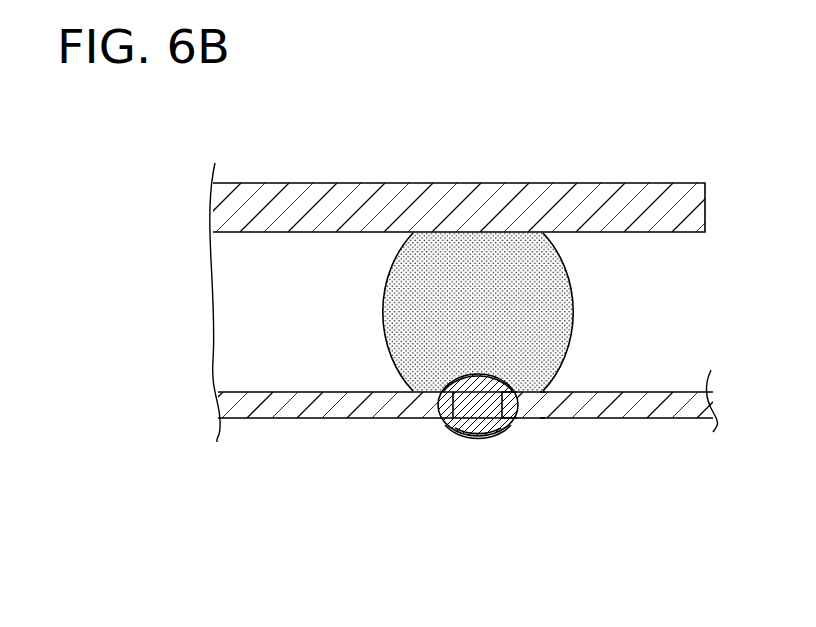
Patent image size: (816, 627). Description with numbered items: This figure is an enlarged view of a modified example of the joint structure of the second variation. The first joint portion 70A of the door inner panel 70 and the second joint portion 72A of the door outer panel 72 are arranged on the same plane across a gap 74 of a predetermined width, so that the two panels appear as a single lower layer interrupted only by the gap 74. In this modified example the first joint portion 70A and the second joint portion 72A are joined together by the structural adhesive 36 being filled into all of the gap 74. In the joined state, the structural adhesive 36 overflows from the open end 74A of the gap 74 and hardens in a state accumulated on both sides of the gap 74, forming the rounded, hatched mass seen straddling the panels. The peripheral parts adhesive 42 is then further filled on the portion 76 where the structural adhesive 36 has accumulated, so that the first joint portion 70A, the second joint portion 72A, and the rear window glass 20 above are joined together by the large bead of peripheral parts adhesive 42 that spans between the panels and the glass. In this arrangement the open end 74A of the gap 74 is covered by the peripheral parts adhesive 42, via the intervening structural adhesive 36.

The rear window glass 20 is at (353, 183).
The peripheral parts adhesive 42 is at (545, 314).
The portion where the structural adhesive has accumulated 76 is at (487, 373).
The door outer panel 72 is at (258, 418).
The second joint portion 72A is at (413, 402).
The structural adhesive 36 is at (457, 436).
The open end 74A is at (485, 447).
The gap 74 is at (478, 437).
The first joint portion 70A is at (532, 403).
The door inner panel 70 is at (636, 420).